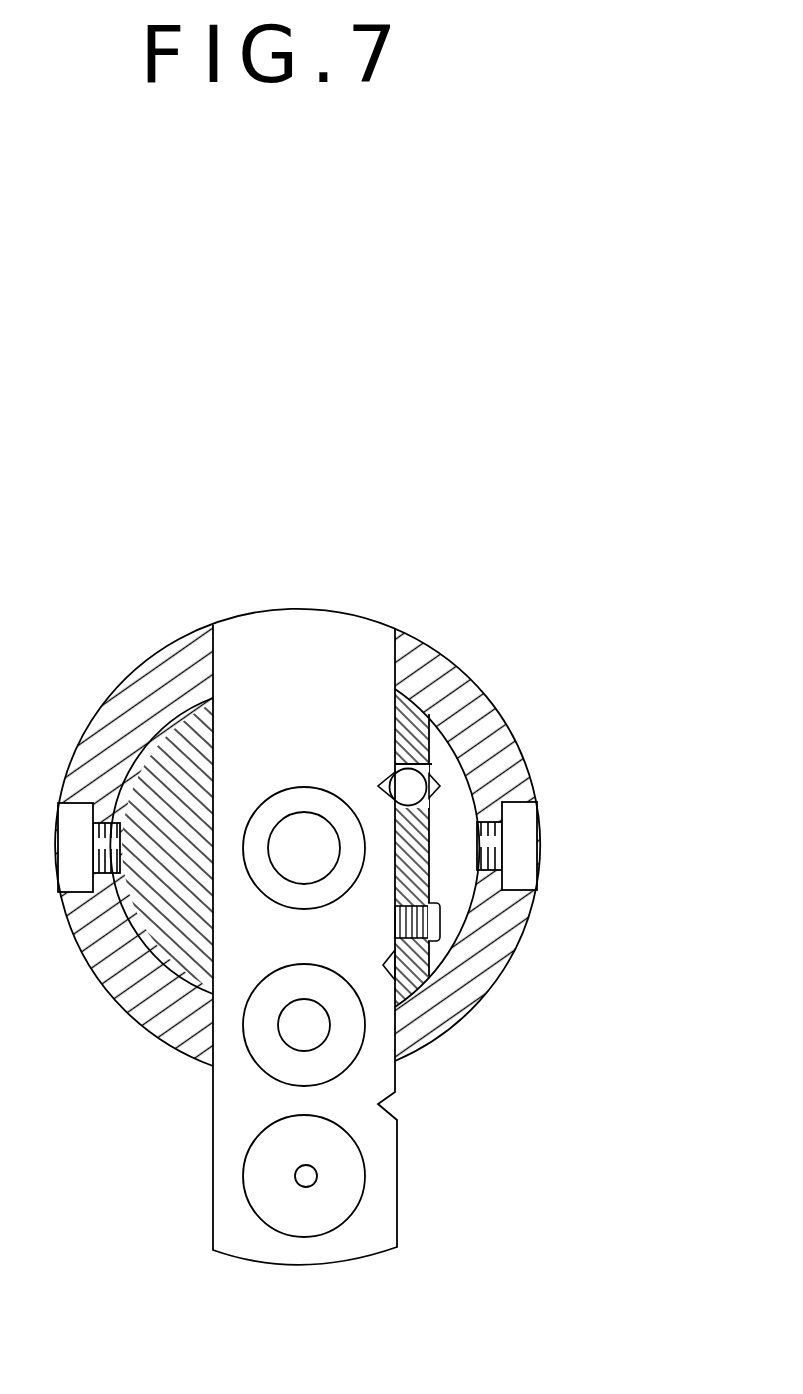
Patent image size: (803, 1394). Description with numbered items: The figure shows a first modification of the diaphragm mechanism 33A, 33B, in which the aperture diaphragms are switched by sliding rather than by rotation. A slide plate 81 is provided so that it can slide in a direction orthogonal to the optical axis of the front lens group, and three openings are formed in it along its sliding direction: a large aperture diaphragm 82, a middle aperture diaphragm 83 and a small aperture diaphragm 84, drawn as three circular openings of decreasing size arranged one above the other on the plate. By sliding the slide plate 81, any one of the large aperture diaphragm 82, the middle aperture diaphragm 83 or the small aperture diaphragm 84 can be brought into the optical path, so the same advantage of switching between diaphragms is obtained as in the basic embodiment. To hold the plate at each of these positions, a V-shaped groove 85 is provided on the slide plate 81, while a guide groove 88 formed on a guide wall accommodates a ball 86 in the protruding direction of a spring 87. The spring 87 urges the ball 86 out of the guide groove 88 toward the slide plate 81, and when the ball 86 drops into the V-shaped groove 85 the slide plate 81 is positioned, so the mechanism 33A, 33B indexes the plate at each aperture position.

The diaphragm mechanism (rack-and-pinion type portion) 33A is at (486, 1092).
The diaphragm mechanism (rack-and-pinion type portion) 33B is at (338, 955).
The slide plate 81 is at (365, 1258).
The large aperture diaphragm 82 is at (272, 868).
The middle aperture diaphragm 83 is at (283, 1038).
The small aperture diaphragm 84 is at (295, 1177).
The V-shaped groove 85 is at (388, 776).
The ball 86 is at (407, 779).
The spring 87 is at (442, 781).
The guide groove 88 is at (503, 735).